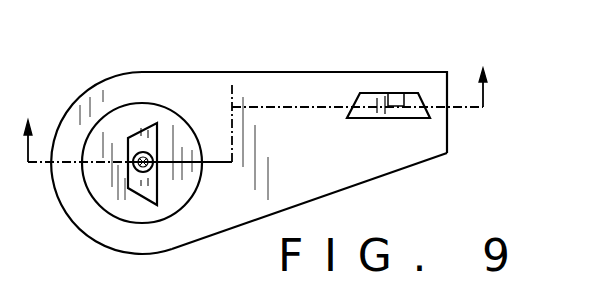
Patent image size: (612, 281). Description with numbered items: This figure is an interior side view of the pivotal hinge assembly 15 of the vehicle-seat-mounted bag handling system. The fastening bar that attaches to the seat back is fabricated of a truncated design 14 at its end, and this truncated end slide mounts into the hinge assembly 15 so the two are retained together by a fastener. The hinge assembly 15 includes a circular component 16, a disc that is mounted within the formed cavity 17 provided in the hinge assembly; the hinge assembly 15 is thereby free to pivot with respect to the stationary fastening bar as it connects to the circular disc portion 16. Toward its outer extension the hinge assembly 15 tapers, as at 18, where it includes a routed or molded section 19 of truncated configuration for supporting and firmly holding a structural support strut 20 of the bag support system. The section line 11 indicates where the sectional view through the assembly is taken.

The section line 11 is at (258, 102).
The truncated design 14 is at (146, 131).
The pivotal hinge assembly 15 is at (136, 71).
The circular component 16 is at (127, 203).
The formed cavity 17 is at (85, 187).
The tapered outer extension 18 is at (412, 166).
The routed or molded section 19 is at (378, 93).
The structural support strut 20 is at (398, 99).